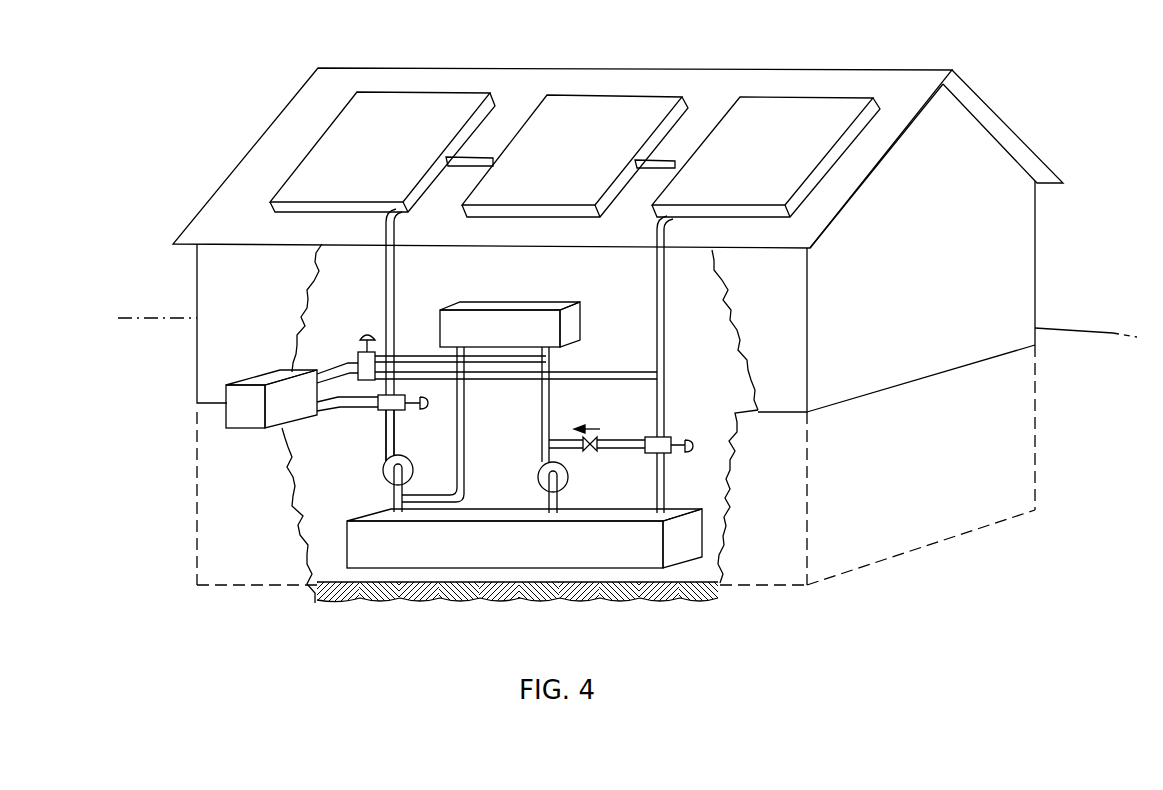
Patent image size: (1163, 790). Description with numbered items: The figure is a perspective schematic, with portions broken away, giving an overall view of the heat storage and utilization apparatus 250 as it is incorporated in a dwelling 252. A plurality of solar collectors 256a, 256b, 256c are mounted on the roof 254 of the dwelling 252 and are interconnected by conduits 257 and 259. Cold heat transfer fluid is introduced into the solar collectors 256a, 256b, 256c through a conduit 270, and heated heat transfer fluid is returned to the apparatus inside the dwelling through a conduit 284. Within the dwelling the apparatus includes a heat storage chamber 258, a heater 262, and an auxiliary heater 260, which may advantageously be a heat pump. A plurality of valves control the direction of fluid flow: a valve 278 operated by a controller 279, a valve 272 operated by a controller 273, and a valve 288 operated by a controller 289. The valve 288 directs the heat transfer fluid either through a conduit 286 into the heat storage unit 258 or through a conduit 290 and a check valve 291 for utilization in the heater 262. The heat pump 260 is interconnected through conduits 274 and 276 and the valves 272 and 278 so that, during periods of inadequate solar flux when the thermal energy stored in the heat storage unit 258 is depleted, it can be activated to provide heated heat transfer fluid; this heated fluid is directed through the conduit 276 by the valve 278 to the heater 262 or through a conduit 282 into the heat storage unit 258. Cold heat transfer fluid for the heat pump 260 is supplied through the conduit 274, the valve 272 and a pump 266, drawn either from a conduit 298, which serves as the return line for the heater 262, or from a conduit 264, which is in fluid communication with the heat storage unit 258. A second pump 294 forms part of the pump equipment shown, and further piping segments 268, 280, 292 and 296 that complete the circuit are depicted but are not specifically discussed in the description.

The heat storage and utilization apparatus 250 is at (1066, 134).
The dwelling 252 is at (1028, 242).
The roof 254 is at (933, 77).
The solar collector 256a is at (443, 100).
The solar collector 256b is at (635, 103).
The solar collector 256c is at (825, 107).
The conduit 257 is at (478, 158).
The heat storage chamber 258 is at (690, 548).
The conduit 259 is at (675, 157).
The auxiliary heater 260 is at (233, 412).
The heater 262 is at (548, 305).
The conduit 264 is at (392, 500).
The pump 266 is at (387, 470).
The pipe 268 is at (393, 440).
The conduit 270 is at (386, 263).
The valve 272 is at (383, 408).
The controller 273 is at (428, 400).
The conduit 274 is at (330, 412).
The conduit 276 is at (330, 366).
The valve 278 is at (355, 356).
The controller 279 is at (365, 333).
The pipe 280 is at (420, 358).
The conduit 282 is at (498, 380).
The conduit 284 is at (664, 345).
The conduit 286 is at (664, 495).
The valve 288 is at (666, 437).
The controller 289 is at (689, 453).
The conduit 290 is at (620, 447).
The check valve 291 is at (595, 428).
The pipe 292 is at (560, 490).
The pump 294 is at (539, 478).
The pipe 296 is at (542, 418).
The conduit 298 is at (464, 462).